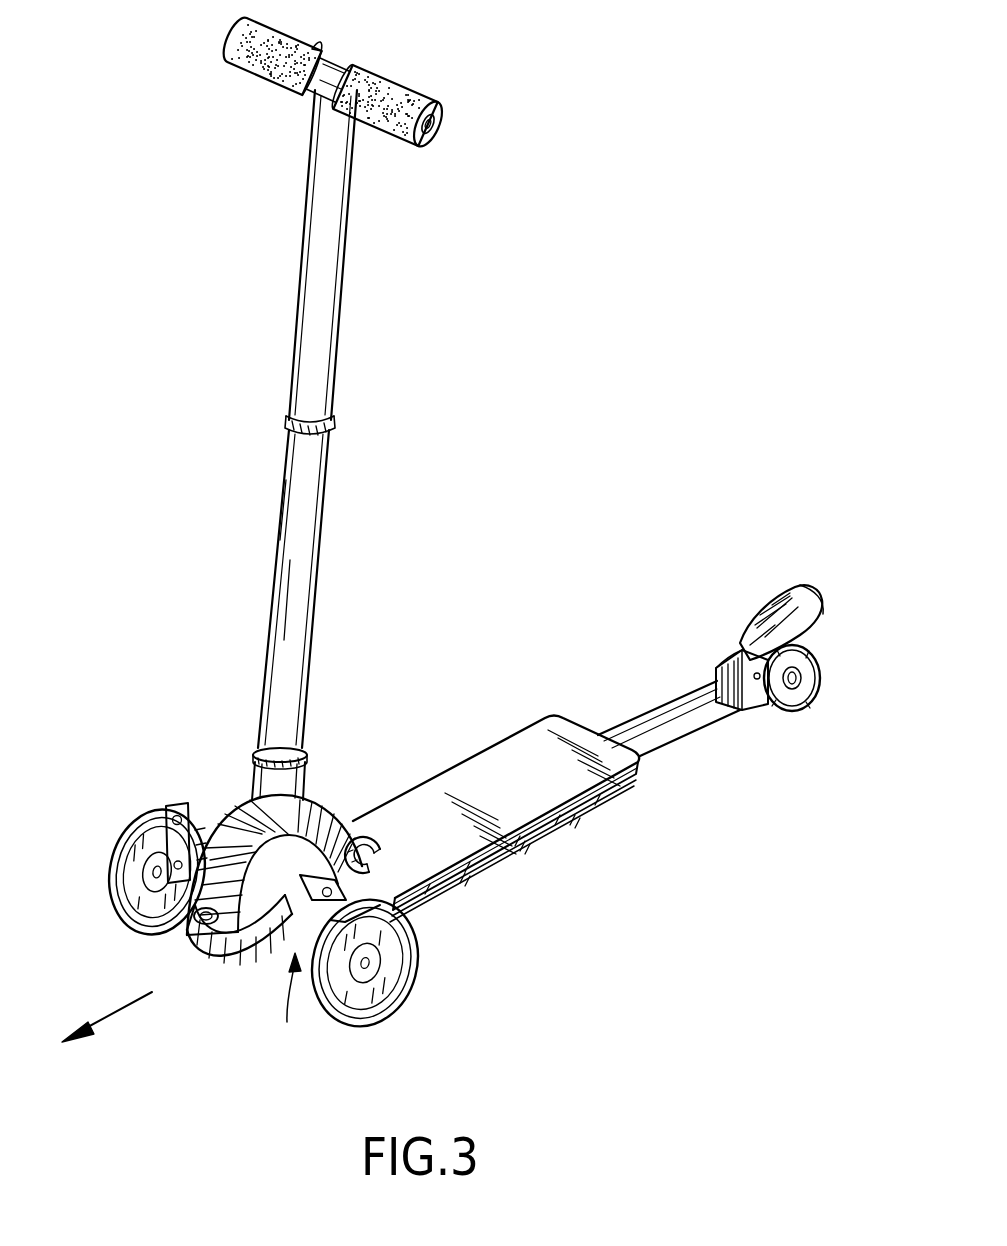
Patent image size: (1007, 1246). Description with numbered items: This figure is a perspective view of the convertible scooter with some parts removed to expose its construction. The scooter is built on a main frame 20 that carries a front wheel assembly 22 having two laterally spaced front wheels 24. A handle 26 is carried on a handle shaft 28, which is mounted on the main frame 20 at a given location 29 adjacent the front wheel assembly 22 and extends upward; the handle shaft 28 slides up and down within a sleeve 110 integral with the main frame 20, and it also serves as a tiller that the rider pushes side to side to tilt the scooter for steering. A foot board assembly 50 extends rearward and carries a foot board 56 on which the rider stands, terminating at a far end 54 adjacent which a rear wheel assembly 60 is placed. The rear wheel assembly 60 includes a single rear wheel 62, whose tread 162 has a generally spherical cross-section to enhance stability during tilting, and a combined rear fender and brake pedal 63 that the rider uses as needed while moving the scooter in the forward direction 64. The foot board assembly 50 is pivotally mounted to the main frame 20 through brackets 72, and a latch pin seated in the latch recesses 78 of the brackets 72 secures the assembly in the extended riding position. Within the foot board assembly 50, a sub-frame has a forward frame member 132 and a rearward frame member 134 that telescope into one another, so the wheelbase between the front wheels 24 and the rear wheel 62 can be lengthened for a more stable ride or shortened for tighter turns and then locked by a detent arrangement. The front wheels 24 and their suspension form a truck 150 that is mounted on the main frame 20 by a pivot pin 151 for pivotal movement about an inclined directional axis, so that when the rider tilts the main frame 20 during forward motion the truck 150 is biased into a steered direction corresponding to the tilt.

The main frame 20 is at (307, 784).
The front wheel assembly 22 is at (294, 1004).
The front wheels 24 is at (120, 932).
The handle 26 is at (405, 82).
The handle shaft 28 is at (318, 258).
The given location 29 is at (233, 790).
The foot board assembly 50 is at (556, 714).
The far end 54 is at (822, 610).
The foot board 56 is at (490, 775).
The rear wheel assembly 60 is at (802, 710).
The rear wheel 62 is at (810, 665).
The combined rear fender and brake pedal 63 is at (778, 597).
The forward direction 64 is at (122, 1012).
The brackets 72 is at (413, 900).
The latch recesses 78 is at (357, 832).
The sleeve 110 is at (302, 535).
The forward frame member 132 is at (607, 808).
The rearward frame member 134 is at (712, 722).
The truck 150 is at (232, 963).
The pivot pin 151 is at (187, 962).
The tread 162 is at (817, 678).